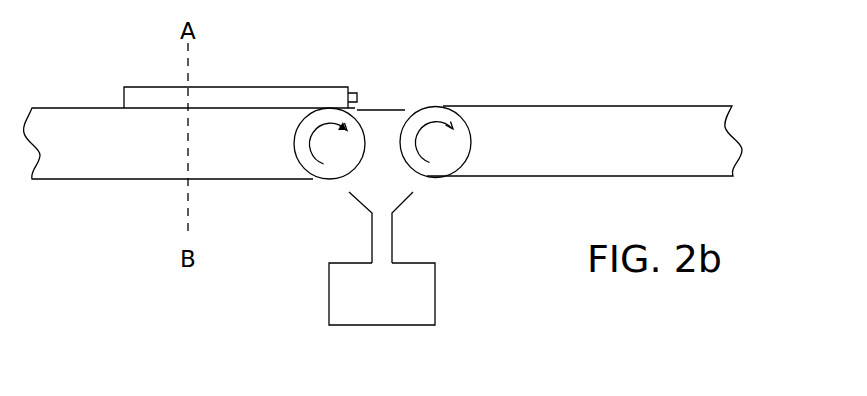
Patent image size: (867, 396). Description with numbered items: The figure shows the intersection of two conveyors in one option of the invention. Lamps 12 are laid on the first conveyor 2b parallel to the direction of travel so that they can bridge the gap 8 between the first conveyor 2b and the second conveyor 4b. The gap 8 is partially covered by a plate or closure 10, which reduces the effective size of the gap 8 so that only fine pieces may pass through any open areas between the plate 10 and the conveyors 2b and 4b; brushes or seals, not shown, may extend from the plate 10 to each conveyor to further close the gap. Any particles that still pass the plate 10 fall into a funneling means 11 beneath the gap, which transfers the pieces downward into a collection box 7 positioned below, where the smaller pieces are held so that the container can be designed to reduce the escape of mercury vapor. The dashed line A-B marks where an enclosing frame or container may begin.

The first conveyor 2b is at (77, 108).
The lamps 12 is at (265, 87).
The gap 8 is at (385, 92).
The plate or closure 10 is at (392, 110).
The second conveyor 4b is at (582, 106).
The funneling means 11 is at (395, 233).
The collection box 7 is at (435, 296).